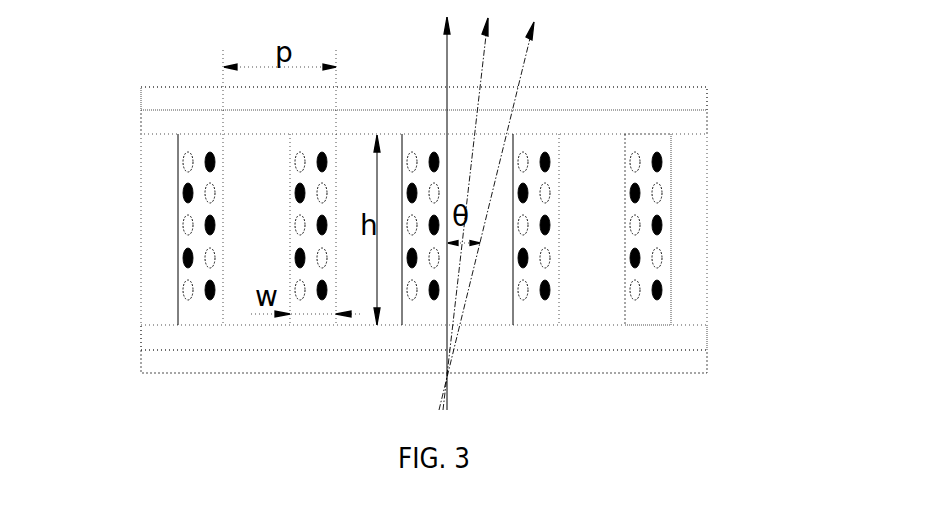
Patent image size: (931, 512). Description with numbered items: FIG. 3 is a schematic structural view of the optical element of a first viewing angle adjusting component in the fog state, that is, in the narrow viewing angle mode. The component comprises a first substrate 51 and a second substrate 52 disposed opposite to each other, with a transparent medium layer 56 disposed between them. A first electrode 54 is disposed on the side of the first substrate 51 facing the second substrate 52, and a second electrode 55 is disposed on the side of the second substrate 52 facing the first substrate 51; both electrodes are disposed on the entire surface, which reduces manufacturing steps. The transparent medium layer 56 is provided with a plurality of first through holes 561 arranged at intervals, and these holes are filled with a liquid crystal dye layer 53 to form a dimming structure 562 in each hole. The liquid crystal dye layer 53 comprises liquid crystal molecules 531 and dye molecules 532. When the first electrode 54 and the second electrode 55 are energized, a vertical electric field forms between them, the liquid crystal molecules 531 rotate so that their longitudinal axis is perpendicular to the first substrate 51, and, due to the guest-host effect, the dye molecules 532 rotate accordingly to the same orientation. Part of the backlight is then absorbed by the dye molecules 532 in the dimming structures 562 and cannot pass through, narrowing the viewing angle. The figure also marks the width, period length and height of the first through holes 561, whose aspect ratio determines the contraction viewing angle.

The first substrate 51 is at (693, 105).
The second substrate 52 is at (692, 368).
The liquid crystal dye layer 53 is at (509, 226).
The liquid crystal molecules 531 is at (662, 191).
The dye molecules 532 is at (662, 223).
The first electrode 54 is at (200, 121).
The second electrode 55 is at (200, 335).
The transparent medium layer 56 is at (158, 257).
The first through holes 561 is at (657, 312).
The dimming structure 562 is at (170, 208).